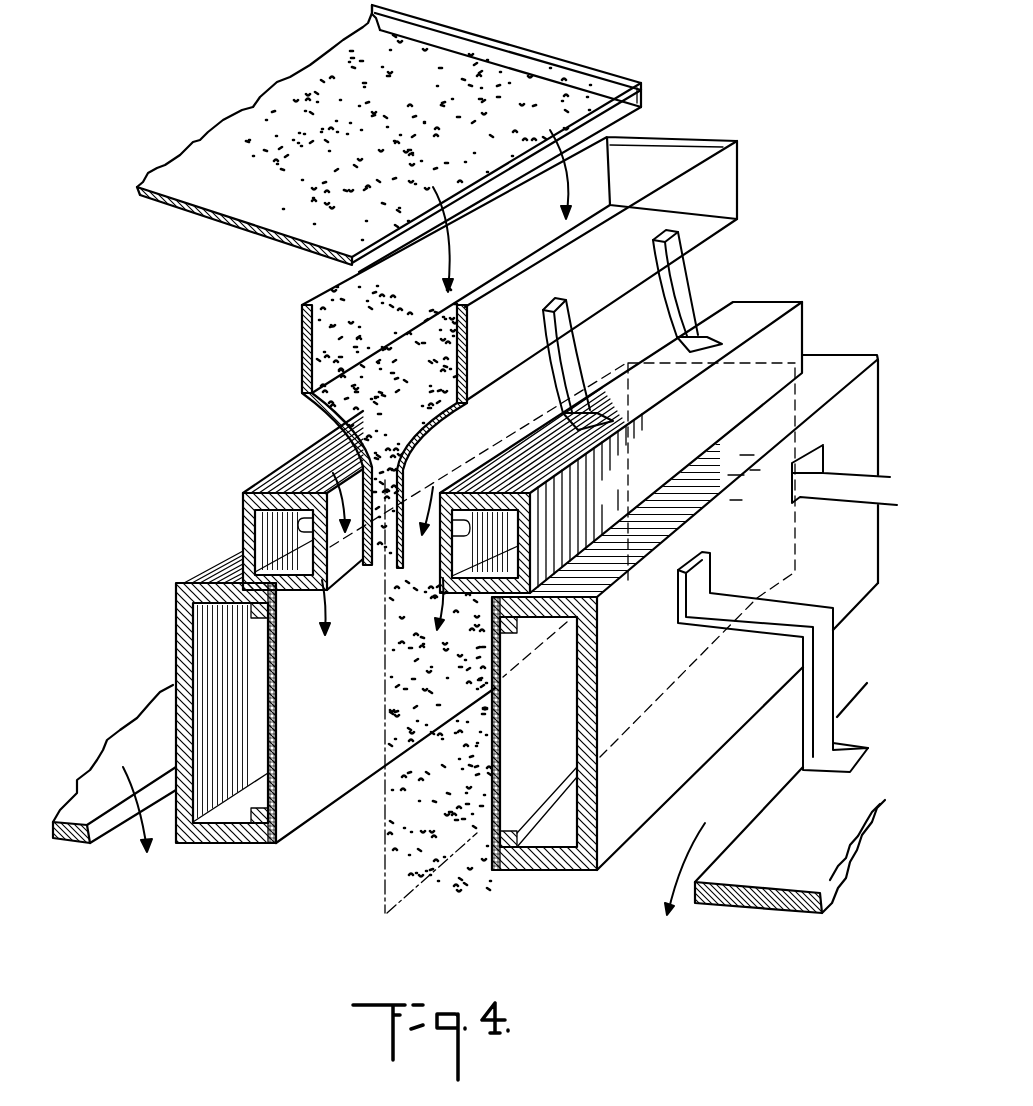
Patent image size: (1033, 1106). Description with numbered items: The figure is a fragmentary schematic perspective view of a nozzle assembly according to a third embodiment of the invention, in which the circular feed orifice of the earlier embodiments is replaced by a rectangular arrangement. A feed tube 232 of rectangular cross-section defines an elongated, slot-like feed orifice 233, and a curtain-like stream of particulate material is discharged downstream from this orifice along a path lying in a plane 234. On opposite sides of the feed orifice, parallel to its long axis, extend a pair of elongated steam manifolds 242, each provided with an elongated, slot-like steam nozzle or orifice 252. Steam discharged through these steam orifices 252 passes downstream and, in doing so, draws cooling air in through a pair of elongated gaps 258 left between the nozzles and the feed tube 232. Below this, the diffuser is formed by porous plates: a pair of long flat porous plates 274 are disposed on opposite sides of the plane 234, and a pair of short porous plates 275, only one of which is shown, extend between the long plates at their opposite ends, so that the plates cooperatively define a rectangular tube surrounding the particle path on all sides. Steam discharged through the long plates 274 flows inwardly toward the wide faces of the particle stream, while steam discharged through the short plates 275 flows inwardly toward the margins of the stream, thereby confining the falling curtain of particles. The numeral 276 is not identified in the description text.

The feed tube 232 is at (363, 480).
The feed orifice 233 is at (390, 555).
The plane 234 is at (415, 893).
The steam manifold 242 is at (248, 530).
The steam nozzle 252 is at (315, 578).
The gap 258 is at (348, 570).
The long flat porous plate 274 is at (288, 813).
The short porous plate 275 is at (740, 368).
The channel member 276 is at (205, 650).